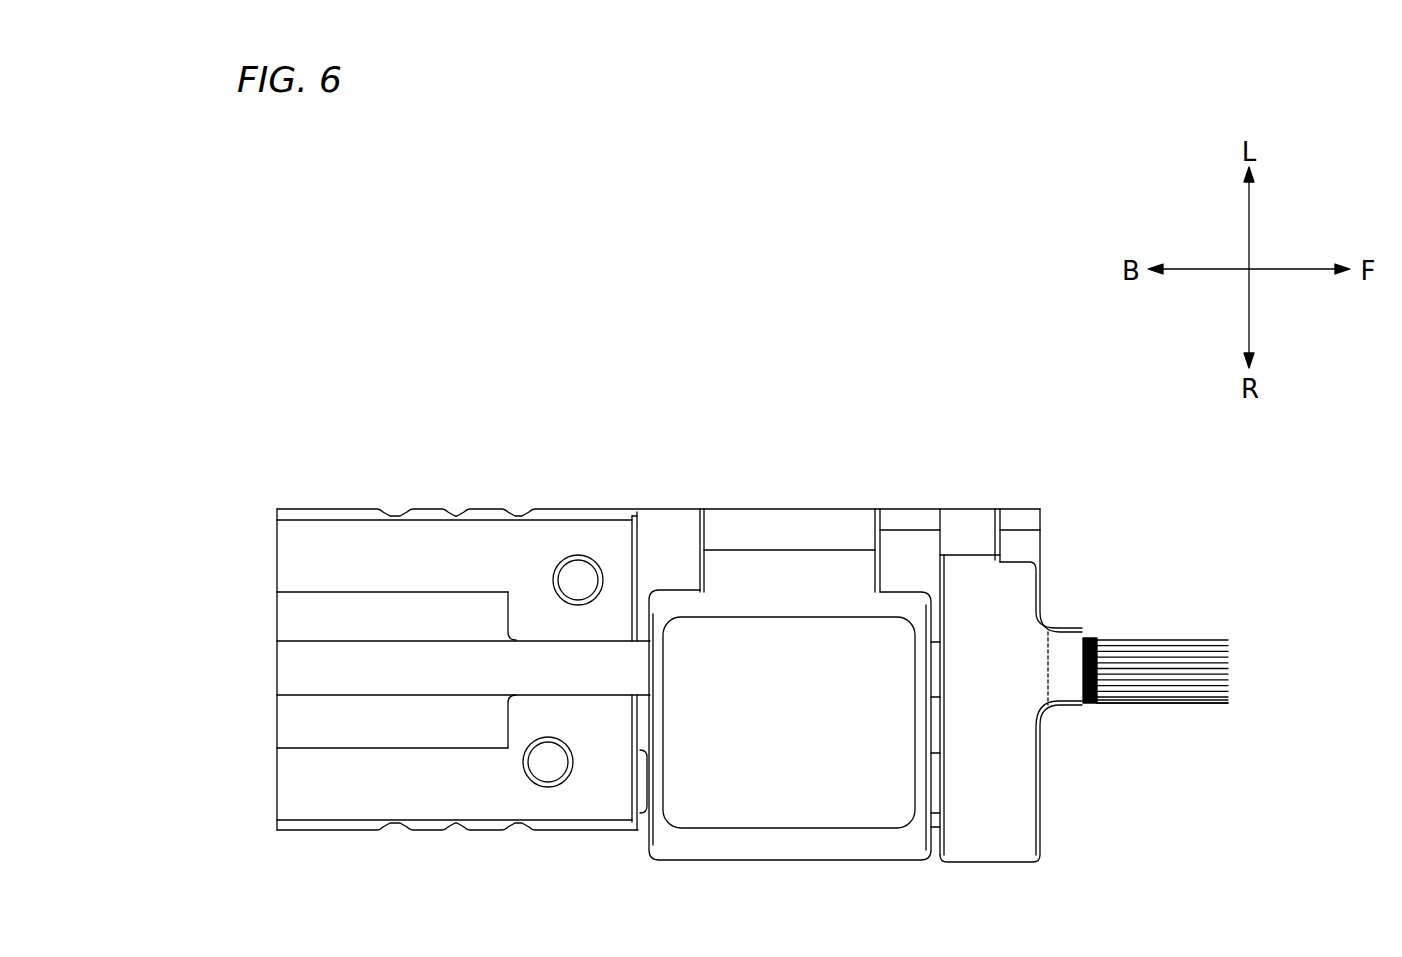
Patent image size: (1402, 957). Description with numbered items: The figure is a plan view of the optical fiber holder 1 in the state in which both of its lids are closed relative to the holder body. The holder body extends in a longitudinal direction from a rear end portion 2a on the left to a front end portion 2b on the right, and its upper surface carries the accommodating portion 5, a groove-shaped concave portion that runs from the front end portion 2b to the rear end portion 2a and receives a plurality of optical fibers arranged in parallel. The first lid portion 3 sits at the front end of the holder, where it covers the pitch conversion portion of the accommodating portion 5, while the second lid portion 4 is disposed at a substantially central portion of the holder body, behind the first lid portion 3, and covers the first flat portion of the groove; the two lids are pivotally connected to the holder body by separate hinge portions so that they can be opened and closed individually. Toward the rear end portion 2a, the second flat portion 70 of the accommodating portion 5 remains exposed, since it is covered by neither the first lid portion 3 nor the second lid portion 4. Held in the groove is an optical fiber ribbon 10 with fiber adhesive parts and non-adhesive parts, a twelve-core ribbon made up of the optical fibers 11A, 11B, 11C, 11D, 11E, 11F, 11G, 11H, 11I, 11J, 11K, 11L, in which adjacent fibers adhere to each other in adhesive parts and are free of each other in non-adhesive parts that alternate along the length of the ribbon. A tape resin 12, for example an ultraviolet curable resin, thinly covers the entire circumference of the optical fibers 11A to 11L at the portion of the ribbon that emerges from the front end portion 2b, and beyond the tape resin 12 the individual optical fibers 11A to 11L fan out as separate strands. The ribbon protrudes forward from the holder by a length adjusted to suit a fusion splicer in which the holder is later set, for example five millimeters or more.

The optical fiber holder 1 is at (847, 447).
The rear end portion 2a is at (277, 685).
The front end portion 2b is at (1043, 540).
The first lid portion 3 is at (1041, 583).
The second lid portion 4 is at (682, 588).
The accommodating portion 5 is at (300, 669).
The second flat portion 70 is at (461, 668).
The optical fiber ribbon with fiber adhesive parts and non-adhesive parts 10 is at (1104, 625).
The tape resin 12 is at (1091, 637).
The optical fiber 11A is at (1190, 638).
The optical fiber 11B is at (1228, 641).
The optical fiber 11C is at (1228, 646).
The optical fiber 11D is at (1228, 652).
The optical fiber 11E is at (1228, 657).
The optical fiber 11F is at (1228, 663).
The optical fiber 11G is at (1228, 669).
The optical fiber 11H is at (1228, 675).
The optical fiber 11I is at (1228, 681).
The optical fiber 11J is at (1228, 687).
The optical fiber 11K is at (1228, 693).
The optical fiber 11L is at (1218, 712).